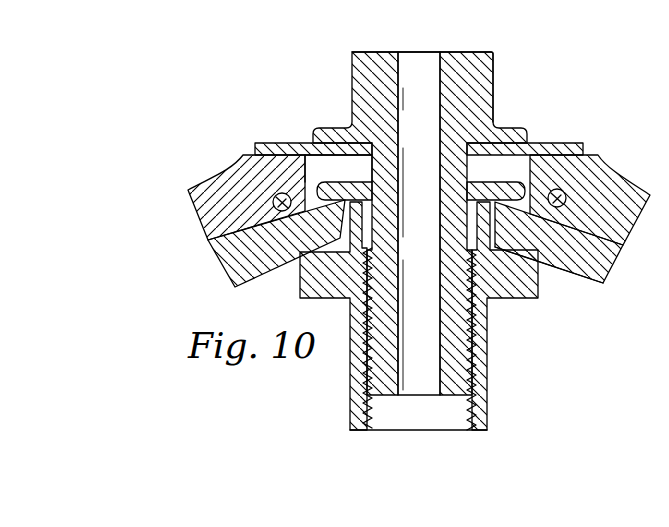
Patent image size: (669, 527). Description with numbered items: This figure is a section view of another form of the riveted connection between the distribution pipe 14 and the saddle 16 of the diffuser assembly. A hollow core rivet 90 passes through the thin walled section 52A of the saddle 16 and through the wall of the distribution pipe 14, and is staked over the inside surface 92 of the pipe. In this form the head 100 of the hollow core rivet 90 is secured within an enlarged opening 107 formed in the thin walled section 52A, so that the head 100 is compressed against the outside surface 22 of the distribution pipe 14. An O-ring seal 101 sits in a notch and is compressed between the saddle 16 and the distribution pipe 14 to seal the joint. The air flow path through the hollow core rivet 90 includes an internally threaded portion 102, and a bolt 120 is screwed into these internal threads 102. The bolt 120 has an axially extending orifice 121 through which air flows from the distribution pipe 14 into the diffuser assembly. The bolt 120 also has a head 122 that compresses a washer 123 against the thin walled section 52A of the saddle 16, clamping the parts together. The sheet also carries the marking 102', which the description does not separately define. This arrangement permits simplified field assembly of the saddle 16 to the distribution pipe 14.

The bolt 120 is at (482, 82).
The axially extending orifice 121 is at (434, 79).
The head 122 is at (482, 62).
The enlarged opening 107 is at (314, 166).
The washer 123 is at (262, 142).
The head 100 is at (538, 143).
The O-ring seal 101 is at (557, 189).
The saddle 16 is at (233, 181).
The thin walled section 52A is at (200, 213).
The outside surface 22 is at (595, 211).
The distribution pipe 14 is at (600, 250).
The inside surface 92 is at (588, 284).
The hollow core rivet 90 is at (520, 273).
The internal threads 102 is at (440, 435).
The bottom end (alternate) 102' is at (195, 12).